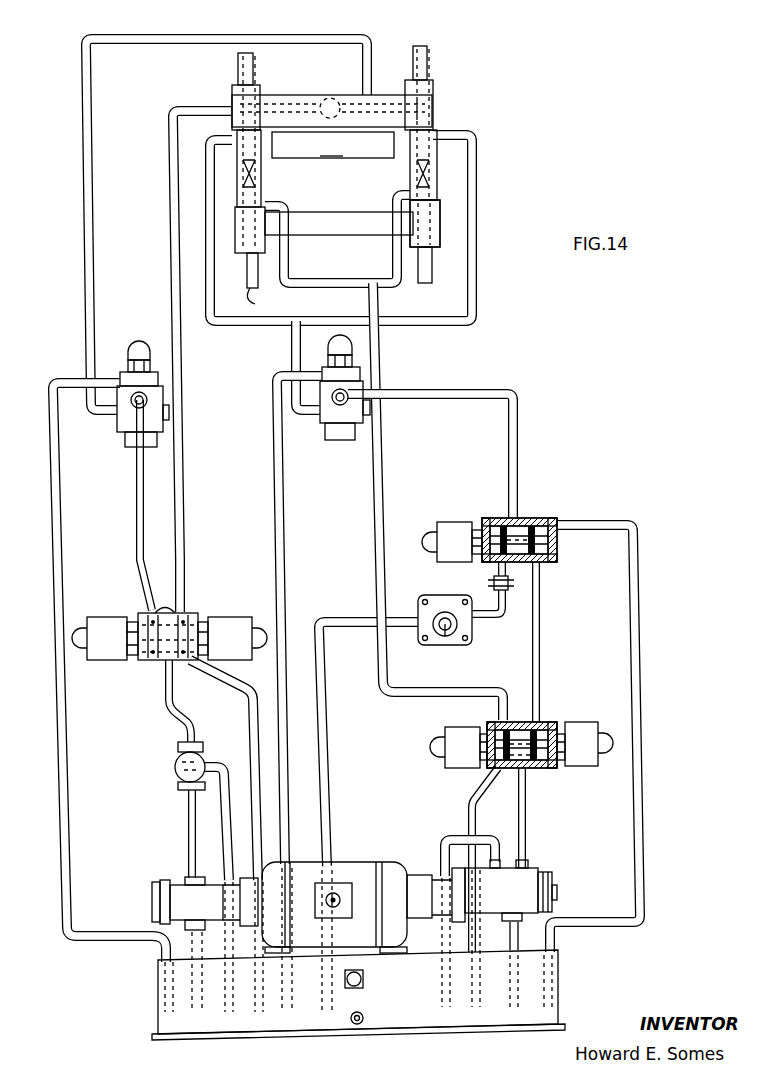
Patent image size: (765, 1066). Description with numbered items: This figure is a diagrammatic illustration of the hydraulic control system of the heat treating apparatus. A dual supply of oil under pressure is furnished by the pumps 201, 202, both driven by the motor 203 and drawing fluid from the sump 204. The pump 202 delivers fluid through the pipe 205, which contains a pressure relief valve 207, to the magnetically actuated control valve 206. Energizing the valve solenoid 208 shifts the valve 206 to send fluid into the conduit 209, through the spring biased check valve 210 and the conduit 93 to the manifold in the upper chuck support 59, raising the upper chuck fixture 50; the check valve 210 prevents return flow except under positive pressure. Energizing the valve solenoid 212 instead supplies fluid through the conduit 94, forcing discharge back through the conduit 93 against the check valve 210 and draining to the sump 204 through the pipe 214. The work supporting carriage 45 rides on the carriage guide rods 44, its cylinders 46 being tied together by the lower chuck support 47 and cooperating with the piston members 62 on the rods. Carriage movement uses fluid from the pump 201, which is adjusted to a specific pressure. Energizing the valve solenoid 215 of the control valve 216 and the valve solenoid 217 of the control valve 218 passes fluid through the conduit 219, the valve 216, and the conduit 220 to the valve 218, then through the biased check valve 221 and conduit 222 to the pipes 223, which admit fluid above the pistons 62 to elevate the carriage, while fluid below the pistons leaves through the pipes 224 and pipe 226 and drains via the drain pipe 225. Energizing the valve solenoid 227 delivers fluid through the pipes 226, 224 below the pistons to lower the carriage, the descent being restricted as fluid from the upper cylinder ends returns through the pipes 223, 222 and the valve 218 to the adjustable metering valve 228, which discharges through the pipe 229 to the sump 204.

The conduit 93 is at (223, 39).
The upper chuck support 59 is at (389, 95).
The conduit 94 is at (221, 100).
The piston member 62 is at (240, 177).
The carriage sleeves or cylinders 46 is at (262, 191).
The work supporting carriage 45 is at (432, 201).
The pipes 223 is at (473, 195).
The lower chuck support 47 is at (351, 217).
The pipes 224 is at (396, 254).
The carriage guide rods 44 is at (429, 276).
The upper chuck fixture 50 is at (320, 221).
The check valve 210 is at (128, 418).
The conduit 209 is at (138, 488).
The check valve 221 is at (353, 440).
The conduit 222 is at (464, 392).
The valve solenoid 217 is at (453, 526).
The control valve 218 is at (545, 509).
The metering valve 228 is at (448, 592).
The conduit 220 is at (539, 608).
The control valve 216 is at (509, 719).
The valve solenoid 215 is at (586, 722).
The valve solenoid 227 is at (457, 729).
The pipe 226 is at (389, 696).
The conduit 219 is at (528, 808).
The drain pipe 225 is at (470, 825).
The pump 201 is at (526, 896).
The motor 203 is at (367, 862).
The pump 202 is at (177, 888).
The sump 204 is at (419, 1024).
The valve solenoid 212 is at (237, 617).
The valve solenoid 208 is at (111, 620).
The magnetically actuated control valve 206 is at (163, 612).
The pipe 214 is at (250, 730).
The pressure relief valve 207 is at (178, 757).
The pipe 205 is at (189, 799).
The pipe 229 is at (324, 662).